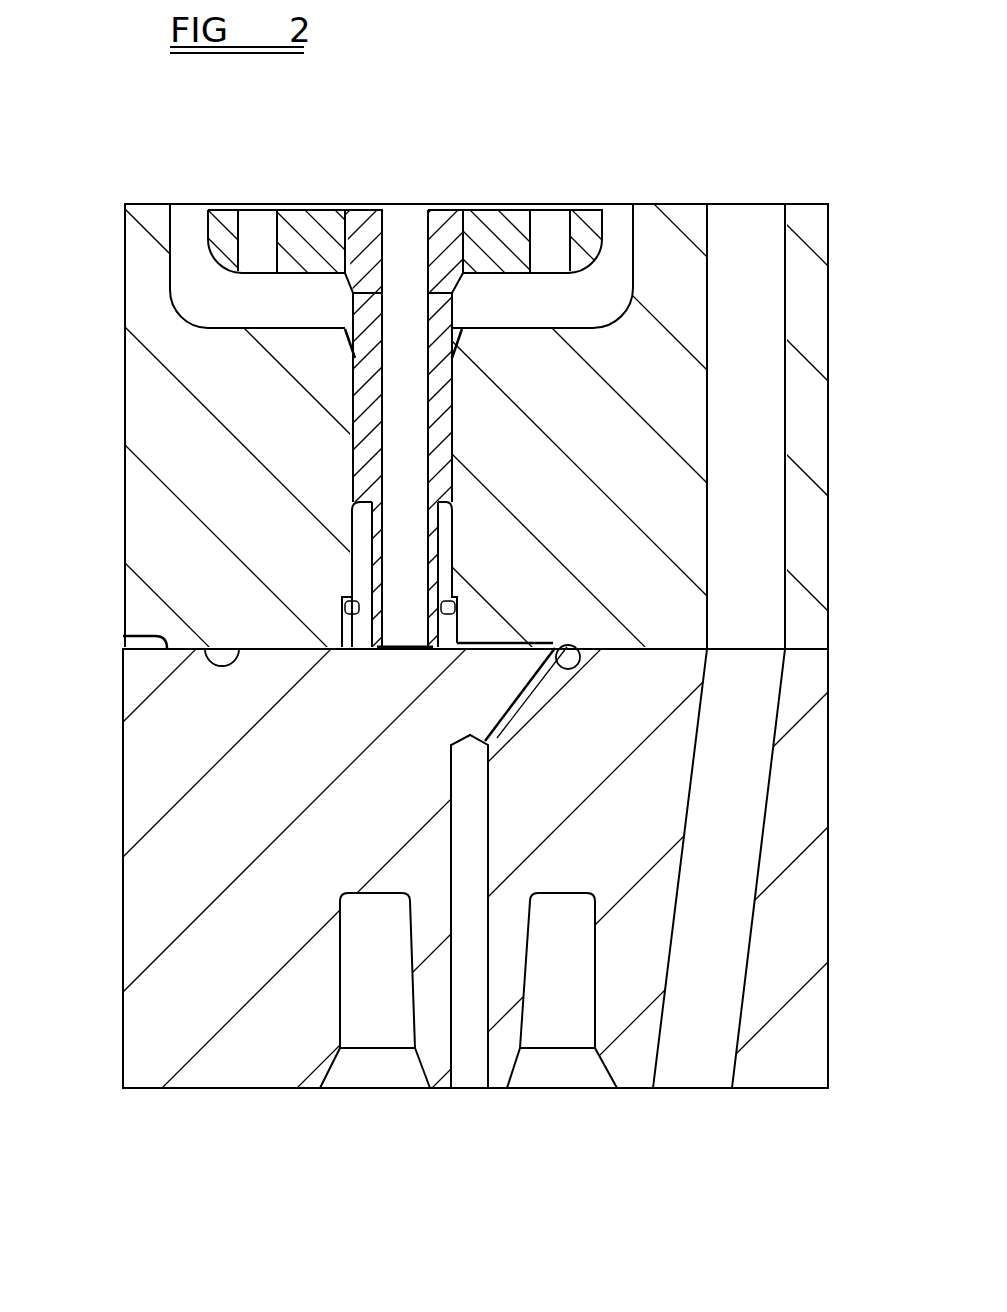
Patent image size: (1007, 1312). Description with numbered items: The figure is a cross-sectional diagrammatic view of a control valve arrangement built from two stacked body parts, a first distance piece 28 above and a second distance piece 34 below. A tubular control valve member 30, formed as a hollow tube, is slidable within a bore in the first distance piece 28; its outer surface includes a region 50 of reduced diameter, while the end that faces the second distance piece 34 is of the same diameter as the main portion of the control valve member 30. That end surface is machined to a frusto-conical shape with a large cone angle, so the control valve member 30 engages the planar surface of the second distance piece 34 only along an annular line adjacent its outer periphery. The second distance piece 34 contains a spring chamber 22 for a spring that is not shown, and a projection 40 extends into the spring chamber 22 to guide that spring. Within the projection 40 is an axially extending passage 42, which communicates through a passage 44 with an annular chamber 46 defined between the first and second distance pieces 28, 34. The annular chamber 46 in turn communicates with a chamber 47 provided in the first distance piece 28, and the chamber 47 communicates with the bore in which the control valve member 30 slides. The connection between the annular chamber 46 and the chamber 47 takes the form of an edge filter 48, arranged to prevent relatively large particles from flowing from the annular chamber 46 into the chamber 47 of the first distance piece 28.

The spring chamber 22 is at (355, 1072).
The first distance piece 28 is at (805, 512).
The tubular control valve member 30 is at (358, 443).
The second distance piece 34 is at (177, 957).
The projection 40 is at (433, 1072).
The axially extending passage 42 is at (470, 1048).
The passage 44 is at (523, 707).
The annular chamber 46 is at (590, 671).
The chamber 47 is at (354, 610).
The edge filter 48 is at (565, 641).
The region of reduced diameter 50 is at (356, 560).